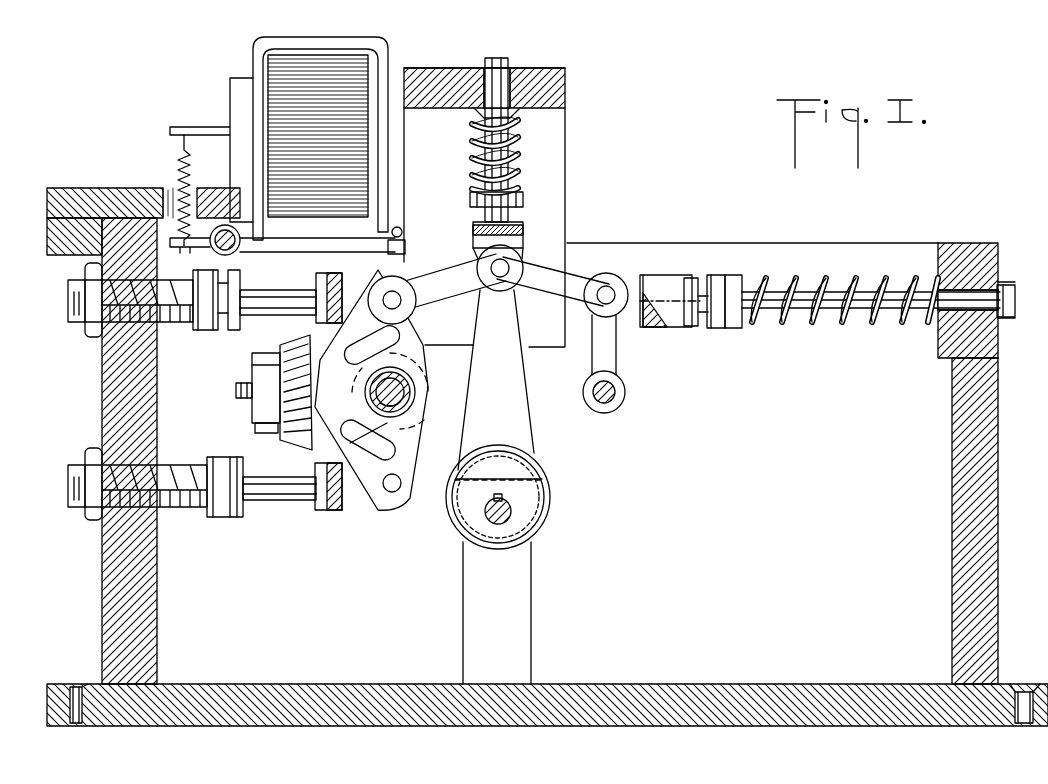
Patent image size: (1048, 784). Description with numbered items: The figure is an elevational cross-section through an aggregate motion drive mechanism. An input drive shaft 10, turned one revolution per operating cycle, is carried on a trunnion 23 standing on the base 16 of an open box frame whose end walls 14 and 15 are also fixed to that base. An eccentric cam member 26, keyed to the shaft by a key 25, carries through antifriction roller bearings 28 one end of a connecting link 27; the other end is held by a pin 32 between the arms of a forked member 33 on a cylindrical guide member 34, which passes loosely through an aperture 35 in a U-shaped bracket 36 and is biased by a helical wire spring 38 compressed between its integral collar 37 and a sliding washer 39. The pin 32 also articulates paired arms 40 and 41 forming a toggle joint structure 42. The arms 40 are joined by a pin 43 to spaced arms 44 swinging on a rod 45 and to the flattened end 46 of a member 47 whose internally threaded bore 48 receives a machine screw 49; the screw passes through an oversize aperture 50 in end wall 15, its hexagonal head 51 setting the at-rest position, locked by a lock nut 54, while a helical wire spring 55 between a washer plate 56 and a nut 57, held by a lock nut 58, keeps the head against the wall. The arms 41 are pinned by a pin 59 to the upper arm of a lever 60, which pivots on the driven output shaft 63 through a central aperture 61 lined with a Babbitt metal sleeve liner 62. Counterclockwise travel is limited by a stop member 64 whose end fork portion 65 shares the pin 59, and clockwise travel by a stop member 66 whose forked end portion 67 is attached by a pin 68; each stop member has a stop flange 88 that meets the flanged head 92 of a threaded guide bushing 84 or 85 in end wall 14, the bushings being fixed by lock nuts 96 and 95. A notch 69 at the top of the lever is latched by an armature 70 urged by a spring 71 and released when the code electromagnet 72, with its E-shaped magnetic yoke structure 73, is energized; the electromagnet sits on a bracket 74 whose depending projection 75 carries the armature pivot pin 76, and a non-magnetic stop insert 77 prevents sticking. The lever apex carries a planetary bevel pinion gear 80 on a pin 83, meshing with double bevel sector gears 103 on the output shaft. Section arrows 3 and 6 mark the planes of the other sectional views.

The input drive shaft 10 is at (530, 524).
The end wall 14 is at (102, 603).
The end wall 15 is at (998, 548).
The base 16 is at (882, 726).
The trunnion 23 is at (531, 583).
The key 25 is at (512, 510).
The eccentric cam member 26 is at (505, 497).
The connecting link 27 is at (514, 412).
The antifriction roller bearings 28 is at (540, 475).
The pin 32 is at (509, 268).
The forked member 33 is at (515, 236).
The guide member 34 is at (503, 62).
The aperture 35 is at (542, 92).
The U-shaped bracket 36 is at (550, 137).
The collar 37 is at (523, 197).
The helical wire spring 38 is at (518, 152).
The washer 39 is at (520, 114).
The toggle arms 40 is at (570, 280).
The toggle arms 41 is at (435, 297).
The toggle joint structure 42 is at (520, 295).
The pin 43 is at (606, 290).
The spaced arms 44 is at (600, 340).
The rod 45 is at (618, 392).
The flattened end 46 is at (655, 275).
The member 47 is at (680, 275).
The internally threaded bore 48 is at (655, 315).
The machine screw 49 is at (820, 278).
The aperture 50 is at (990, 272).
The hexagonal head 51 is at (1008, 300).
The lock nut 54 is at (700, 320).
The helical wire spring 55 is at (840, 330).
The washer plate 56 is at (942, 240).
The nut 57 is at (718, 275).
The lock nut 58 is at (730, 328).
The pin 59 is at (398, 294).
The lever 60 is at (415, 360).
The central aperture 61 is at (410, 385).
The Babbitt metal sleeve liner 62 is at (405, 397).
The driven output shaft 63 is at (398, 410).
The stop member 64 is at (258, 315).
The end fork portion 65 is at (340, 290).
The stop member 66 is at (270, 500).
The forked end portion 67 is at (318, 510).
The pin 68 is at (398, 490).
The notch 69 is at (405, 245).
The armature 70 is at (282, 252).
The spring 71 is at (177, 160).
The code electromagnet 72 is at (268, 70).
The E-shaped magnetic yoke structure 73 is at (272, 42).
The bracket 74 is at (230, 95).
The depending projection 75 is at (192, 250).
The pin 76 is at (234, 250).
The non-magnetic stop insert 77 is at (402, 230).
The planetary bevel pinion gear 80 is at (262, 433).
The pin 83 is at (235, 396).
The guide bushing 84 is at (168, 322).
The guide bushing 85 is at (182, 465).
The stop flange 88 is at (234, 330).
The flanged head 92 is at (207, 330).
The lock nut 95 is at (92, 448).
The lock nut 96 is at (88, 337).
The double bevel sector gears 103 is at (380, 441).
The section line 3 is at (433, 40).
The section line 6 is at (388, 245).